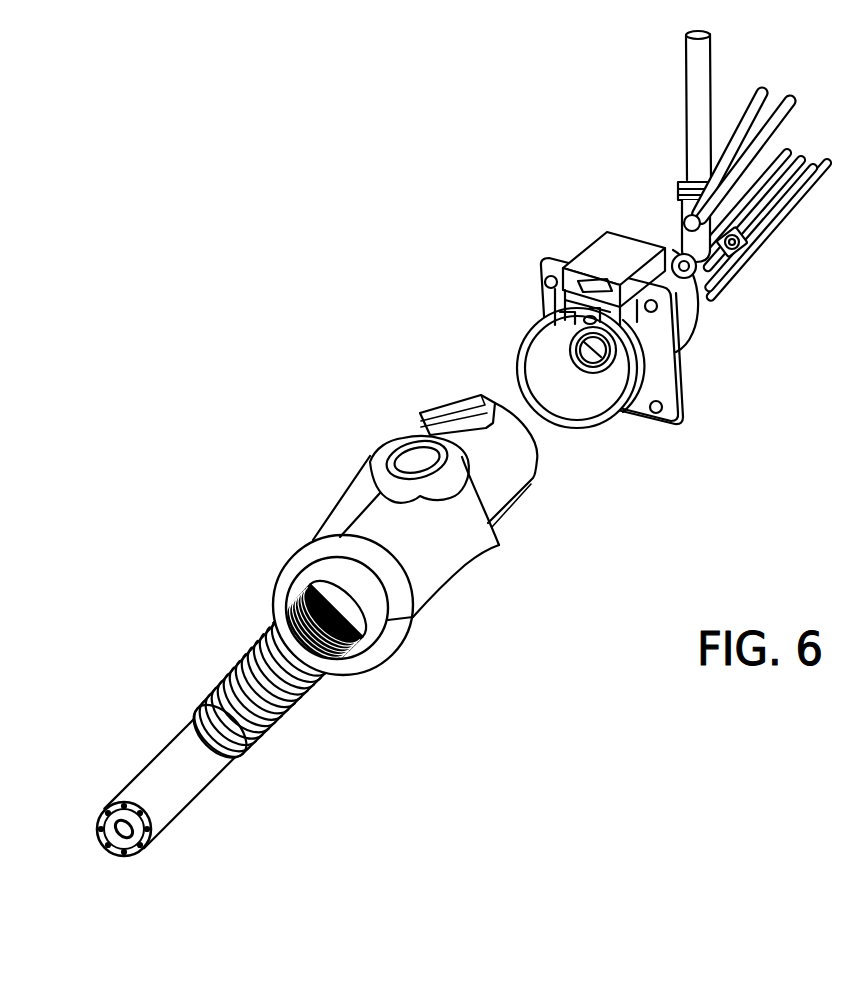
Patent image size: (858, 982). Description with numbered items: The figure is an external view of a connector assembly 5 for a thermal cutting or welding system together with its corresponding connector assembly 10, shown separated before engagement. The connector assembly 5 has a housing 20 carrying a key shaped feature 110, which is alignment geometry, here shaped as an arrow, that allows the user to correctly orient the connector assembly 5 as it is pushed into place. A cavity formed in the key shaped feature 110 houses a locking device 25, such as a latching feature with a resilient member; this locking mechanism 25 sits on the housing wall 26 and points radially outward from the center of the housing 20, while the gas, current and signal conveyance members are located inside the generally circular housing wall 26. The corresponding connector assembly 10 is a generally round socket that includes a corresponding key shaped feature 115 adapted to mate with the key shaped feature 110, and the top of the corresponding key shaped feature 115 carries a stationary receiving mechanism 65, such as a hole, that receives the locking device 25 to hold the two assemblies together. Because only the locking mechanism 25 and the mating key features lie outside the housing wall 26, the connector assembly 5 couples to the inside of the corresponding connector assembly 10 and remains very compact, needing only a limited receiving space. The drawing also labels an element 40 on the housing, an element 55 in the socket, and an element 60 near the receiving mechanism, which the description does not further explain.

The connector assembly 5 is at (447, 686).
The corresponding connector assembly 10 is at (698, 428).
The housing 20 is at (501, 520).
The locking device 25 is at (436, 422).
The housing wall 26 is at (521, 475).
The push button 40 is at (400, 458).
The receptacle bore 55 is at (594, 374).
The latch arms 60 is at (560, 322).
The stationary receiving mechanism 65 is at (578, 290).
The key shaped feature 110 is at (445, 418).
The corresponding key shaped feature 115 is at (604, 248).